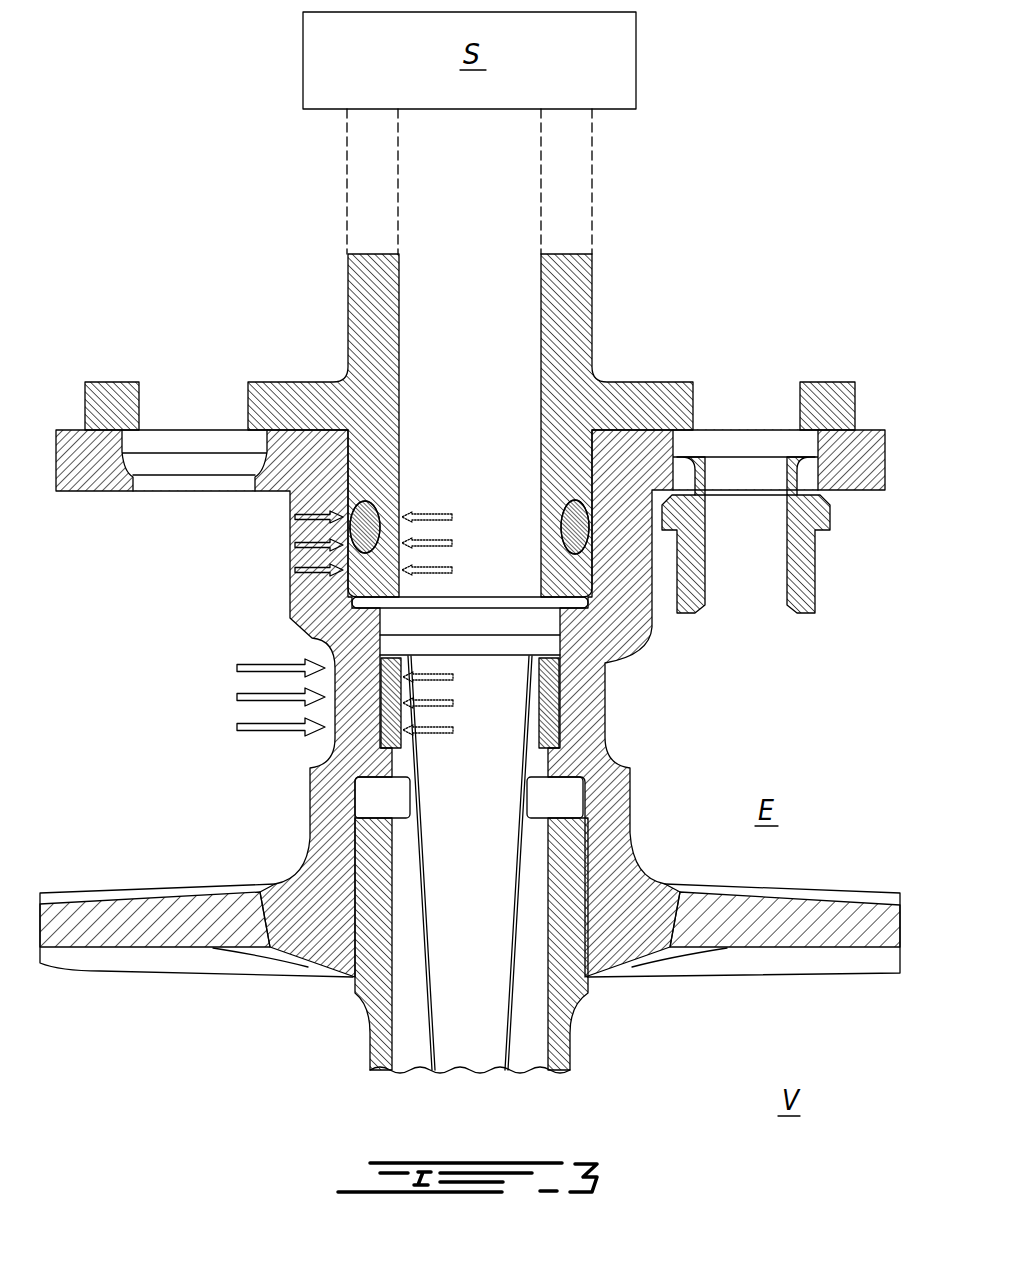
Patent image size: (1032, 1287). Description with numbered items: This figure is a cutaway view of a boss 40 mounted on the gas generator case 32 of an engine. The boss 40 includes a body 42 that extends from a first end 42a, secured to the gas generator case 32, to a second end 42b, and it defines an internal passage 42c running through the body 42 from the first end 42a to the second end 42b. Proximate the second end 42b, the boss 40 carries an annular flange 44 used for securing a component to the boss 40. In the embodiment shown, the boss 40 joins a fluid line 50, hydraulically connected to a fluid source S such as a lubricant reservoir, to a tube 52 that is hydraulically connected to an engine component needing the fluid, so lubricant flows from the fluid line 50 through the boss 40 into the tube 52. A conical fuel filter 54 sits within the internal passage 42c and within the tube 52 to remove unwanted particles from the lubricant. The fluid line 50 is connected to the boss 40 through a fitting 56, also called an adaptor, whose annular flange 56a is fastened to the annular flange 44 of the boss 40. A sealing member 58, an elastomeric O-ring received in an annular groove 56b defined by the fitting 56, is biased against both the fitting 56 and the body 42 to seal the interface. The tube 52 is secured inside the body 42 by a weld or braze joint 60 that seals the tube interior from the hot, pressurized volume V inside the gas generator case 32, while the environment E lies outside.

The gas generator case 32 is at (823, 925).
The boss 40 is at (672, 760).
The body 42 is at (330, 795).
The first end 42a is at (290, 920).
The second end 42b is at (660, 460).
The internal passage 42c is at (400, 626).
The annular flange 44 is at (863, 450).
The fluid line 50 is at (567, 155).
The tube 52 is at (565, 953).
The fuel filter 54 is at (427, 903).
The fitting 56 is at (370, 415).
The annular flange 56a is at (108, 397).
The annular groove 56b is at (352, 600).
The sealing member 58 is at (582, 520).
The weld or braze joint 60 is at (357, 897).